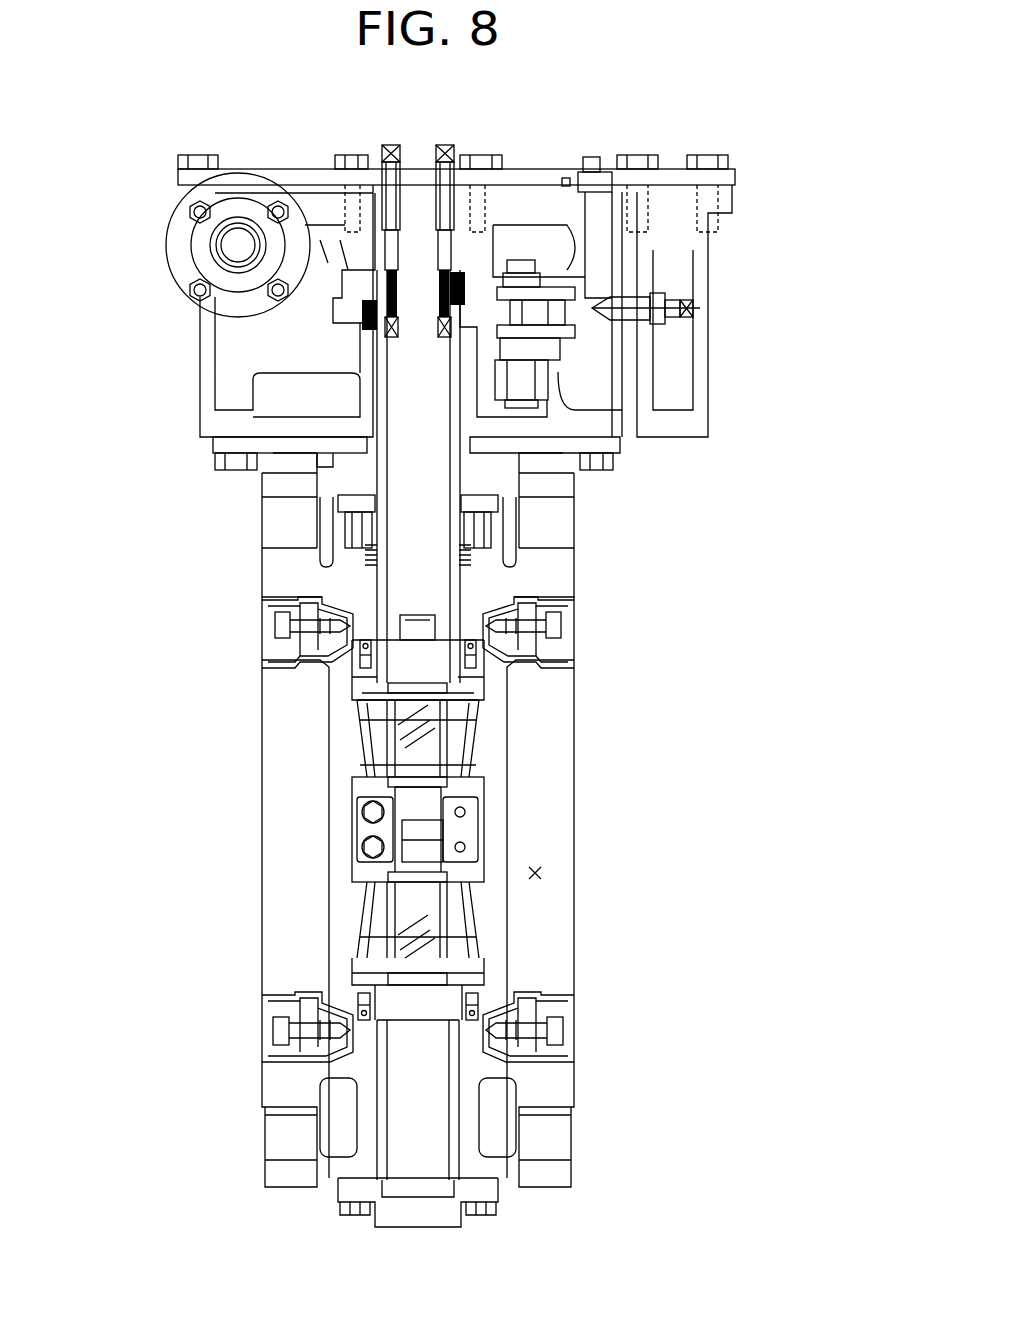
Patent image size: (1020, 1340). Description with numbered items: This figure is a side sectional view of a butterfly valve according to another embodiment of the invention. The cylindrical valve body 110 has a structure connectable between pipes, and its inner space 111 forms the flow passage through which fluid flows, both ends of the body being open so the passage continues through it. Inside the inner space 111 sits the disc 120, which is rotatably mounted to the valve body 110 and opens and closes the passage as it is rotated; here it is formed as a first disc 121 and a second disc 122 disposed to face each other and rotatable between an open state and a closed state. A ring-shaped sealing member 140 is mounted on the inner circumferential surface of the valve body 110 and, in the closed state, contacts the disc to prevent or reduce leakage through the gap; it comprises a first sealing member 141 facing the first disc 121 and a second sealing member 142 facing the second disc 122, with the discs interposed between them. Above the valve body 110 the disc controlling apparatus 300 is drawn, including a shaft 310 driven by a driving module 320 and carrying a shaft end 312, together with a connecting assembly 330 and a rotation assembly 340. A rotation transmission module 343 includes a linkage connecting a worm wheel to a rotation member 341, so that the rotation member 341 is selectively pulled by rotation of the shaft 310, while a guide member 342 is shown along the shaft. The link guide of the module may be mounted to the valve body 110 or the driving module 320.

The valve body 110 is at (555, 562).
The inner space 111 is at (540, 872).
The disc 120 is at (640, 745).
The first disc 121 is at (470, 788).
The second disc 122 is at (492, 770).
The sealing member 140 is at (650, 575).
The first sealing member 141 is at (380, 593).
The second sealing member 142 is at (507, 613).
The driving unit 300 is at (150, 886).
The shaft 310 is at (403, 792).
The drive shaft 312 is at (240, 242).
The driving module 320 is at (160, 288).
The connecting block 330 is at (346, 845).
The shaft tube 340 is at (368, 582).
The rotation member 341 is at (455, 480).
The guide block 342 is at (455, 683).
The rotation transmission module 343 is at (548, 161).